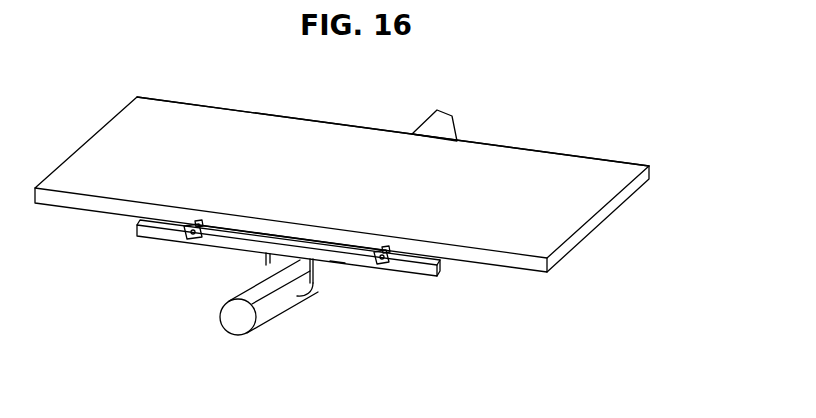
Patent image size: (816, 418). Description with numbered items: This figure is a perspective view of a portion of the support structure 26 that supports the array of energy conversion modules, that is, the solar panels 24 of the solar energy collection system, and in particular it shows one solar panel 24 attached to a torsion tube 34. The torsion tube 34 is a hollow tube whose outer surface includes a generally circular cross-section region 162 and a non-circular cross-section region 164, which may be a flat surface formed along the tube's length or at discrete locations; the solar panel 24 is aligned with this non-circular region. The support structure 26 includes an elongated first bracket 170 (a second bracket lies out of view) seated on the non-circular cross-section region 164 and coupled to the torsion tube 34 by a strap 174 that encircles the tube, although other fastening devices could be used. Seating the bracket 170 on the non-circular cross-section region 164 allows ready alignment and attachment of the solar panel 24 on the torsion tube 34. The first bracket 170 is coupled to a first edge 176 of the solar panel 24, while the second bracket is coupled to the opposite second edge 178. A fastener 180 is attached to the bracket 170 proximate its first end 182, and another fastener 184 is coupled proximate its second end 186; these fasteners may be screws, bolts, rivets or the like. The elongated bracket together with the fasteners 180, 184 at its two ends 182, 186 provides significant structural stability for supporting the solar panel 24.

The solar panel 24 is at (566, 163).
The support structure 26 is at (713, 303).
The torsion tube 34 is at (462, 137).
The circular cross-section region 162 is at (270, 331).
The non-circular cross-section region 164 is at (262, 283).
The first bracket 170 is at (337, 259).
The strap 174 is at (296, 296).
The first edge 176 is at (547, 272).
The second edge 178 is at (253, 113).
The fastener 180 is at (382, 260).
The first end 182 is at (445, 269).
The fastener 184 is at (182, 233).
The second end 186 is at (137, 231).